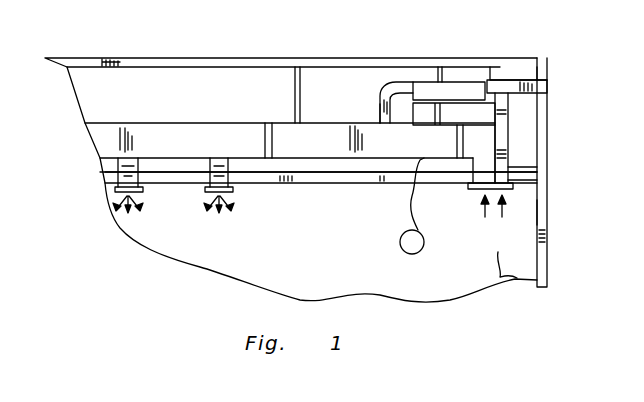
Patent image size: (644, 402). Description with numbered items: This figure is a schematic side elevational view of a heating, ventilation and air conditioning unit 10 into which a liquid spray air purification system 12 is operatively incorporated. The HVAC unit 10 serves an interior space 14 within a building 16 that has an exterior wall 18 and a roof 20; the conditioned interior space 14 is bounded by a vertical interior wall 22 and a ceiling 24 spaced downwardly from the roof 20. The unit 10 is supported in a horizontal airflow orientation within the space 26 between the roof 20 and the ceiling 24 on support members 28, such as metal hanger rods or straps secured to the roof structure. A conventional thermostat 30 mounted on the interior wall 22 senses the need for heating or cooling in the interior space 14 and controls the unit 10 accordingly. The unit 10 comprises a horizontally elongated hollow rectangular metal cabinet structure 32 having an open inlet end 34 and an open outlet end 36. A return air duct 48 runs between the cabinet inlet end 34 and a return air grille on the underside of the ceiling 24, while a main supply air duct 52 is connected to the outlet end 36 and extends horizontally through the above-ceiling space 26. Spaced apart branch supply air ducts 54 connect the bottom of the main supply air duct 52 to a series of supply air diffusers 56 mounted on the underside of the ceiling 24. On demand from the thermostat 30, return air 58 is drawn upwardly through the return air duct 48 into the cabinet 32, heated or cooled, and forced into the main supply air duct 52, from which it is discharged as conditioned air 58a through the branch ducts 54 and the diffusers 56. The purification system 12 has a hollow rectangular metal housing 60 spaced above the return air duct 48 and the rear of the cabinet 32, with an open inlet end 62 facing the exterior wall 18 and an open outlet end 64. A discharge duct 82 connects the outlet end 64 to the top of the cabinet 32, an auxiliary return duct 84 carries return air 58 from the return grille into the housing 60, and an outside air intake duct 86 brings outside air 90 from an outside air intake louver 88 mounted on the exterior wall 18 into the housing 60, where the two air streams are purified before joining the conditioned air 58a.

The heating, ventilation and air conditioning unit 10 is at (318, 104).
The liquid spray air purification system 12 is at (291, 52).
The interior space 14 is at (571, 172).
The building 16 is at (556, 137).
The exterior wall 18 is at (547, 214).
The roof 20 is at (190, 58).
The vertical interior wall 22 is at (333, 261).
The ceiling 24 is at (314, 183).
The space between roof and ceiling 26 is at (148, 96).
The support members 28 is at (294, 97).
The thermostat 30 is at (418, 254).
The cabinet structure 32 is at (363, 159).
The inlet end 34 is at (456, 142).
The outlet end 36 is at (273, 143).
The return air duct 48 is at (510, 122).
The main supply air duct 52 is at (190, 123).
The branch supply air ducts 54 is at (103, 173).
The supply air diffusers 56 is at (104, 199).
The return air 58 is at (482, 211).
The conditioned air 58a is at (128, 214).
The housing 60 is at (462, 99).
The inlet end of housing 62 is at (501, 70).
The outlet end of housing 64 is at (400, 92).
The discharge duct 82 is at (379, 113).
The auxiliary return duct 84 is at (520, 172).
The outside air intake duct 86 is at (540, 57).
The outside air intake louver 88 is at (552, 79).
The outside air 90 is at (560, 85).